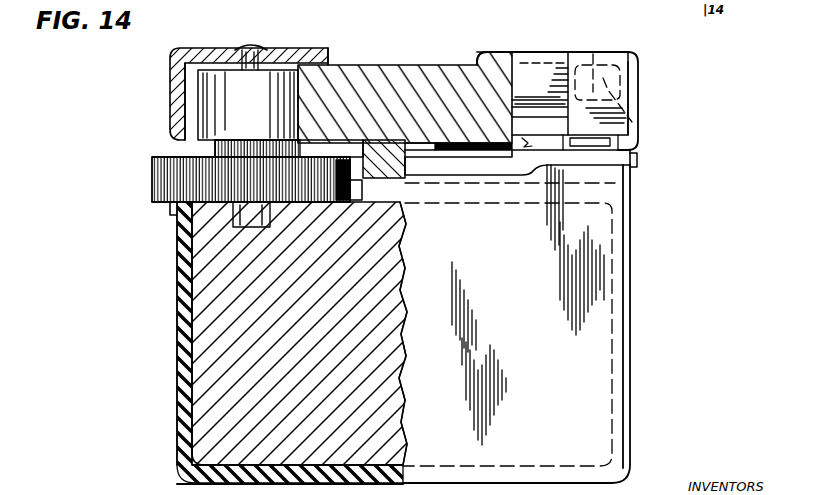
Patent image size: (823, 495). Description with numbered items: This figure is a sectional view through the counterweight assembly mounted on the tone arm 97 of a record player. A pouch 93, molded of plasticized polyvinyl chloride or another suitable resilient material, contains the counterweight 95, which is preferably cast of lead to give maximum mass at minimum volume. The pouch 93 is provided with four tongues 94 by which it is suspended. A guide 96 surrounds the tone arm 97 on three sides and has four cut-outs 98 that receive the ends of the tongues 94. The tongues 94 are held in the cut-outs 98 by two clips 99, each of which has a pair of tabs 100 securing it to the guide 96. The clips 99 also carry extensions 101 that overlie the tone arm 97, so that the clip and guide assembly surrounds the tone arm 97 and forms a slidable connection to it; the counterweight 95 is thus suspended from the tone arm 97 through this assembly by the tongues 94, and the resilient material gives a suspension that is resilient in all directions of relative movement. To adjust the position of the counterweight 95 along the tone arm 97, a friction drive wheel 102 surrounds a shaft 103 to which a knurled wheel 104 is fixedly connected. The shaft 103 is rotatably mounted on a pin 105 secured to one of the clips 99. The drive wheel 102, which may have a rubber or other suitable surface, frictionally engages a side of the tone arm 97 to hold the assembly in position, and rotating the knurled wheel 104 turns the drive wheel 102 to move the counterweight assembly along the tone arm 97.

The pouch 93 is at (630, 303).
The tongues 94 is at (593, 54).
The counterweight 95 is at (283, 348).
The guide 96 is at (545, 143).
The tone arm 97 is at (415, 65).
The cut-outs 98 is at (643, 71).
The clips 99 is at (310, 36).
The tabs 100 is at (543, 65).
The extensions 101 is at (480, 62).
The friction drive wheel 102 is at (207, 107).
The shaft 103 is at (212, 150).
The knurled wheel 104 is at (152, 188).
The pin 105 is at (248, 45).